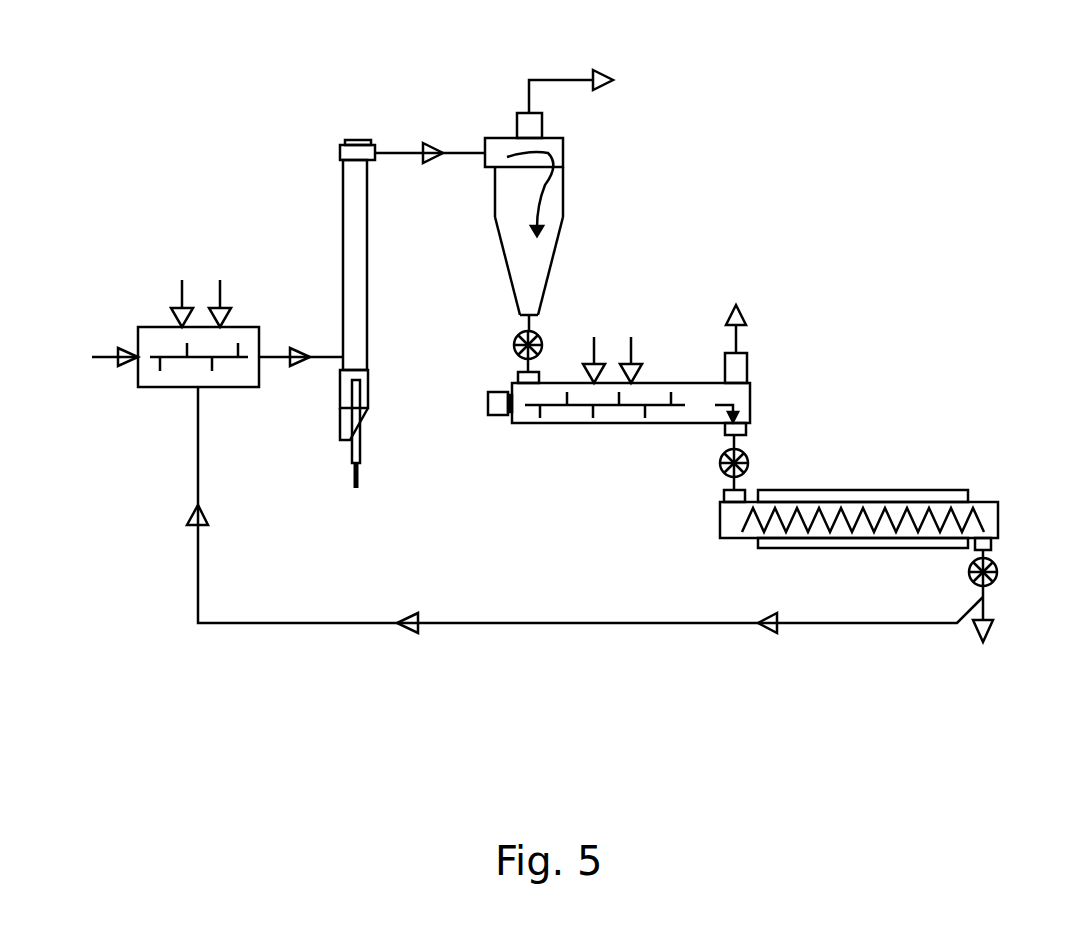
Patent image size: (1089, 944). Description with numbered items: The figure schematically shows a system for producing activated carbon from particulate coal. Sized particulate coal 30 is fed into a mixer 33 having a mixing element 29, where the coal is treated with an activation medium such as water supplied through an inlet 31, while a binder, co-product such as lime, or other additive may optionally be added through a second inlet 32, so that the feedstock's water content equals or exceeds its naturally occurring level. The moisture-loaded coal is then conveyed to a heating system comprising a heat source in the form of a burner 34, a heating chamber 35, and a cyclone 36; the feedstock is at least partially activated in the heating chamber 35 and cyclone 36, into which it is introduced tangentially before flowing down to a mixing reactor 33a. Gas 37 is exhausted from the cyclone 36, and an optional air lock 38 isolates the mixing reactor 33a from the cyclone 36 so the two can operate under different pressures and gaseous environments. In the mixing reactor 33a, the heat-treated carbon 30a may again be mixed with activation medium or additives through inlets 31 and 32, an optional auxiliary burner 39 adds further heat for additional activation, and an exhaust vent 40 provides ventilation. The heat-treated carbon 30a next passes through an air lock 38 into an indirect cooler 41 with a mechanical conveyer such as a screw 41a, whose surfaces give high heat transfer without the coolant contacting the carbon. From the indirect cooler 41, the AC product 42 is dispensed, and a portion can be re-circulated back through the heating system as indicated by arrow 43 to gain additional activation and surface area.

The mixing element 29 is at (148, 360).
The particulate coal 30 is at (105, 350).
The heat-treated carbon 30a is at (622, 287).
The inlet 31 is at (172, 300).
The inlet 32 is at (231, 300).
The mixer 33 is at (243, 392).
The mixing reactor 33a is at (595, 425).
The burner 34 is at (372, 383).
The heating chamber 35 is at (372, 253).
The cyclone 36 is at (568, 188).
The gas 37 is at (580, 75).
The air lock 38 is at (512, 338).
The auxiliary burner 39 is at (490, 420).
The exhaust vent 40 is at (745, 345).
The indirect cooler 41 is at (900, 483).
The screw 41a is at (748, 525).
The AC product 42 is at (990, 603).
The arrow 43 is at (538, 617).